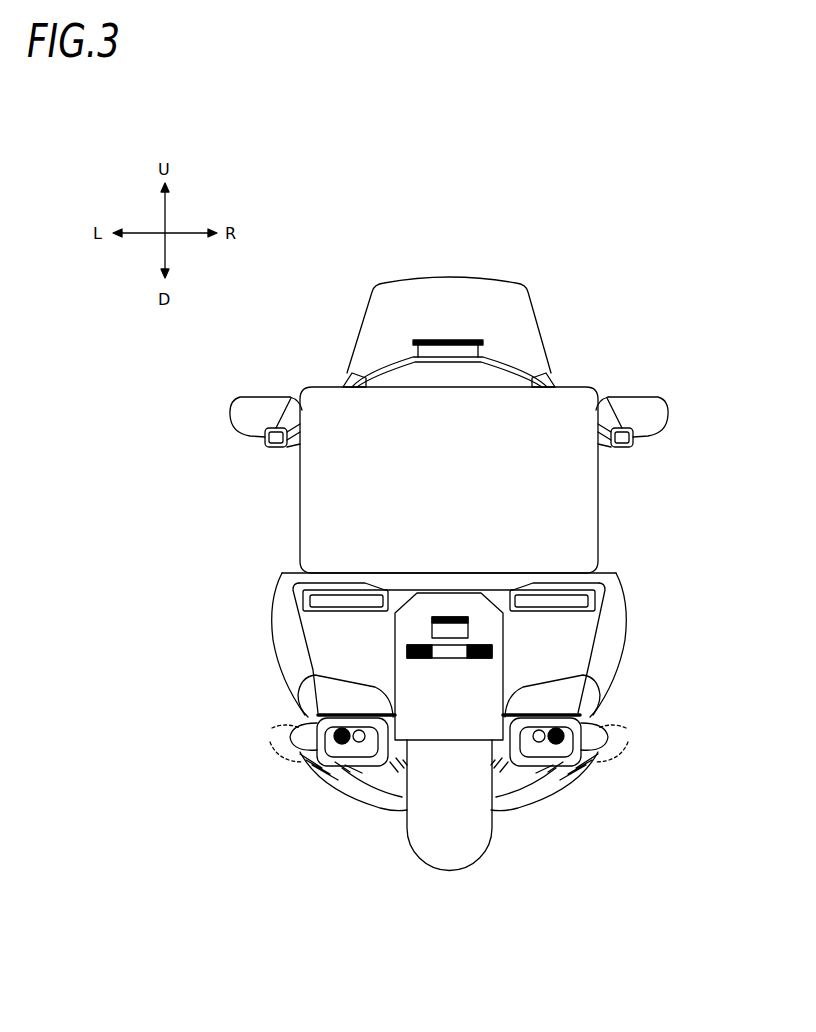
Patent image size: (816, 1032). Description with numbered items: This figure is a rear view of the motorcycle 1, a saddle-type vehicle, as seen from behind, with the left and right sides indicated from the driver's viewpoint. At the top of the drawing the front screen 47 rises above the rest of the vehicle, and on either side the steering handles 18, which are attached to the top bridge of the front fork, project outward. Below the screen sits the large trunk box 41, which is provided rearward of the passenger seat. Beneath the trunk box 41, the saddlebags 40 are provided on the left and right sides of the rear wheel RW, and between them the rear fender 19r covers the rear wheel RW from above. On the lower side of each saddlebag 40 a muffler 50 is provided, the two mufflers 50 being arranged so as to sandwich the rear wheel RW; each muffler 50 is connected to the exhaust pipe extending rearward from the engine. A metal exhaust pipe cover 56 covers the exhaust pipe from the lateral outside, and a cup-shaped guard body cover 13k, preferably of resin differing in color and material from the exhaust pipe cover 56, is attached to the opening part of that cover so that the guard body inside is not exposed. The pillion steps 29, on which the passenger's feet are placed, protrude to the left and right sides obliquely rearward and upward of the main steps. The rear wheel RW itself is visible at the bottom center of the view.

The motorcycle 1 is at (578, 270).
The front screen 47 is at (410, 297).
The steering handles 18 is at (271, 430).
The trunk box 41 is at (497, 483).
The saddlebags 40 is at (272, 623).
The rear fender 19r is at (487, 677).
The pillion steps 29 is at (300, 719).
The guard body cover 13k is at (297, 737).
The exhaust pipe cover 56 is at (300, 758).
The muffler 50 is at (320, 777).
The rear wheel RW is at (475, 825).